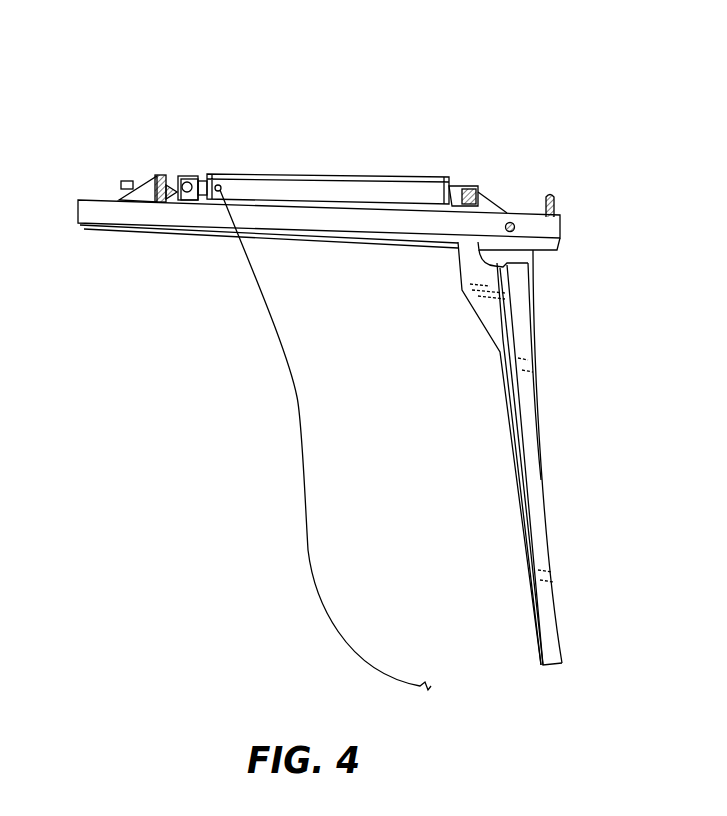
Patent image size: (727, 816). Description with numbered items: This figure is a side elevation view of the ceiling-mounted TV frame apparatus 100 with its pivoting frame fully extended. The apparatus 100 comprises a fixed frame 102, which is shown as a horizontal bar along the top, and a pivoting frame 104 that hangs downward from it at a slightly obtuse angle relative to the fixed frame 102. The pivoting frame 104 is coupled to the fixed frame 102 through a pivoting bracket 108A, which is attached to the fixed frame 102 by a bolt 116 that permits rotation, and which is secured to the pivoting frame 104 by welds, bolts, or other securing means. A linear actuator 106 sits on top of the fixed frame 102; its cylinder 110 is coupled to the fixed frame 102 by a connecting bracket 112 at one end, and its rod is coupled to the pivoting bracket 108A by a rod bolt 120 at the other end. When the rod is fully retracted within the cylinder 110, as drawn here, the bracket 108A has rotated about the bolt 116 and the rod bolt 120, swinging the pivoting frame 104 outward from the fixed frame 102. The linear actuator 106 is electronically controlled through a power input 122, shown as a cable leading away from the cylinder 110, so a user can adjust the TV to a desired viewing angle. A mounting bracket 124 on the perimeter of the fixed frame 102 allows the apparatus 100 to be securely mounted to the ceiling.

The ceiling-mounted TV frame apparatus 100 is at (278, 56).
The fixed frame 102 is at (127, 213).
The pivoting frame 104 is at (543, 507).
The linear actuator 106 is at (323, 160).
The pivoting bracket 108A is at (490, 315).
The cylinder 110 is at (373, 193).
The connecting bracket 112 is at (147, 195).
The bolt 116 is at (513, 226).
The rod bolt 120 is at (473, 188).
The power input 122 is at (297, 397).
The mounting bracket 124 is at (556, 205).